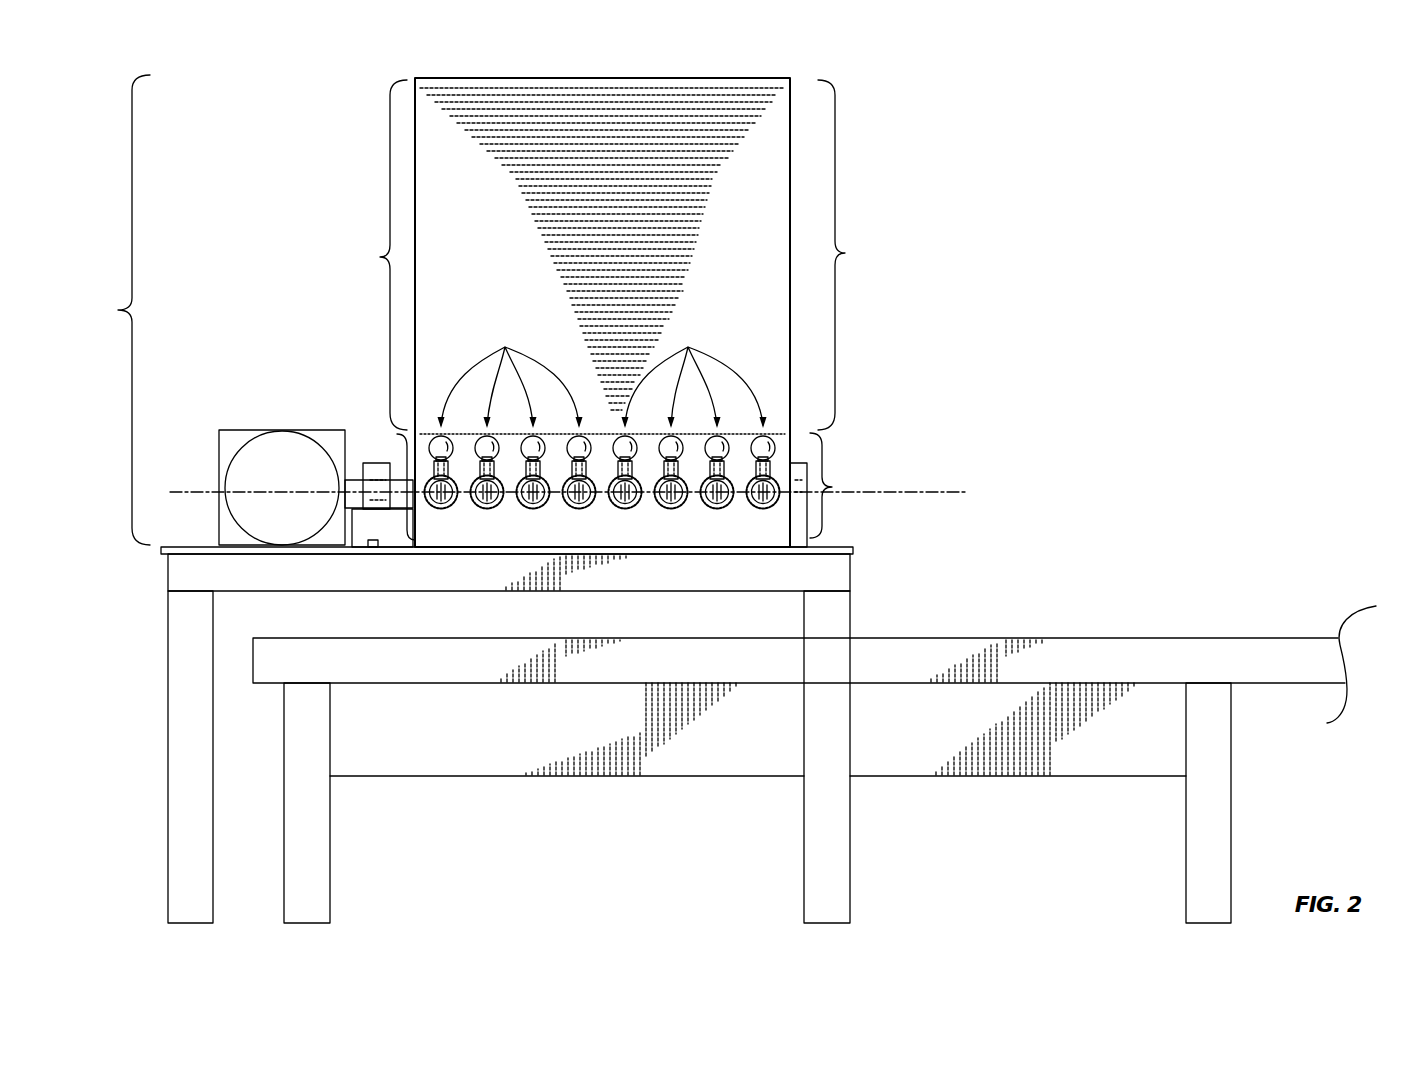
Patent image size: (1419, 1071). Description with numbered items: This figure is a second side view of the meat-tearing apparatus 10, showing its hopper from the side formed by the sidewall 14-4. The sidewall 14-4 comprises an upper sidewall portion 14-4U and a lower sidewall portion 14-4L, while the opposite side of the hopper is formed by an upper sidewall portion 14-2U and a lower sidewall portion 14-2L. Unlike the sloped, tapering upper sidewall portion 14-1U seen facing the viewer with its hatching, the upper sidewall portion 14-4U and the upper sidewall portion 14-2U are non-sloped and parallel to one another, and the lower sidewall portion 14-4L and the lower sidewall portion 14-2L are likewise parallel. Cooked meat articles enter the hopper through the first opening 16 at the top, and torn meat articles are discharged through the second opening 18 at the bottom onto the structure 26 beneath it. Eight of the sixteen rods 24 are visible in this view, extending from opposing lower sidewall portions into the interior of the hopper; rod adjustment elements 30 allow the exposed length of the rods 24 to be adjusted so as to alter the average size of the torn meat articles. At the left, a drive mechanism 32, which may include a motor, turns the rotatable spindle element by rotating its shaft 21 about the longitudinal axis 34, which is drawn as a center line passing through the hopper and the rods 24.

The meat-tearing apparatus 10 is at (808, 43).
The first opening 16 is at (602, 290).
The upper sidewall portion 14-1U is at (519, 265).
The upper sidewall portion 14-4U is at (380, 257).
The upper sidewall portion 14-2U is at (845, 253).
The lower sidewall portion 14-4L is at (397, 486).
The lower sidewall portion 14-2L is at (832, 487).
The sidewall 14-4 is at (235, 311).
The drive mechanism 32 is at (240, 414).
The longitudinal axis 34 is at (192, 492).
The rod adjustment elements 30 is at (506, 347).
The rods 24 is at (442, 505).
The shaft 21 is at (397, 500).
The second opening 18 is at (518, 560).
The conveyor 26 is at (1028, 617).